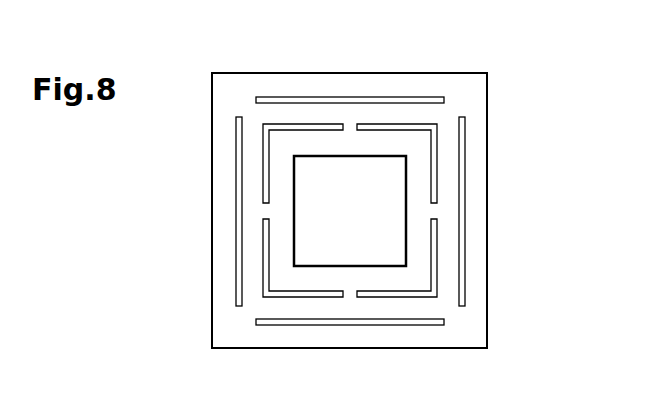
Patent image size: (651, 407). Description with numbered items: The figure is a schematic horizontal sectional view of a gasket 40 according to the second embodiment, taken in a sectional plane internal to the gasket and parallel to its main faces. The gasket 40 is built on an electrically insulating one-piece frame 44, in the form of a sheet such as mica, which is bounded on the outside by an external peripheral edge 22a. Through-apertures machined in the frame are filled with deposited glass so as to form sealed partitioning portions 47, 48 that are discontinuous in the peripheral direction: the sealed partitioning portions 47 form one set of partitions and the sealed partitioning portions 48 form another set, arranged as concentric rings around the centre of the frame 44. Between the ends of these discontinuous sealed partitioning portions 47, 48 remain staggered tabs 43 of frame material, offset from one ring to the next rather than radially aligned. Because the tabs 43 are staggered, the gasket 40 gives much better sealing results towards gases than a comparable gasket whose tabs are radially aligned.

The gasket 40 is at (150, 216).
The external peripheral edge 22a is at (488, 257).
The frame 44 is at (500, 212).
The sealed partitioning portions 47 is at (236, 157).
The sealed partitioning portions 48 is at (391, 118).
The staggered tabs 43 is at (247, 108).